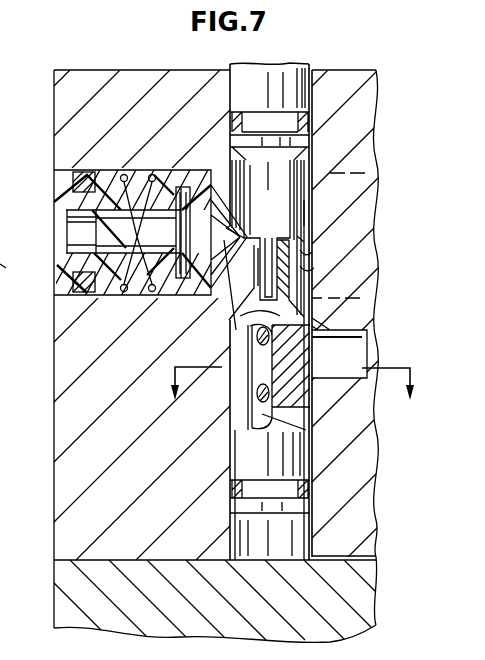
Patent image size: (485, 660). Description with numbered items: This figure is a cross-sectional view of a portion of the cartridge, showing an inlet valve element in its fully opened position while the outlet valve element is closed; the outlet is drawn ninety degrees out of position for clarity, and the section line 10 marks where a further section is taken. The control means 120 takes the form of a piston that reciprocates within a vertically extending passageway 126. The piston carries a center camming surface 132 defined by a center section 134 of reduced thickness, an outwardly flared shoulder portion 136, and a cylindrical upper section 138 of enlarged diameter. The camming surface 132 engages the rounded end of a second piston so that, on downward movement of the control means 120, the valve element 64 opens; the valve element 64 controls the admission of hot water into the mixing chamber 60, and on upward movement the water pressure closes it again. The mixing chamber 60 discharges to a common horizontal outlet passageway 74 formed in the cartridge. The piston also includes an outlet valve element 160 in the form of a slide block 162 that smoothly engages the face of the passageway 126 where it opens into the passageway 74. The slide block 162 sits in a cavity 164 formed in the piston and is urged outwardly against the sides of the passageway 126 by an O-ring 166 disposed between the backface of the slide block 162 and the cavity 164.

The control means 120 is at (299, 53).
The first valve element 64 is at (153, 158).
The cylindrical upper section 138 is at (272, 214).
The camming surface 132 is at (312, 209).
The mixing chamber 60 is at (312, 230).
The outwardly flared shoulder portion 136 is at (305, 262).
The vertically extending passageway 126 is at (307, 271).
The outlet valve element 160 is at (336, 313).
The center section 134 is at (252, 262).
The cavity 164 is at (258, 358).
The O-ring 166 is at (260, 396).
The common horizontal outlet passageway 74 is at (360, 334).
The slide block 162 is at (303, 363).
The section line 10 is at (290, 384).